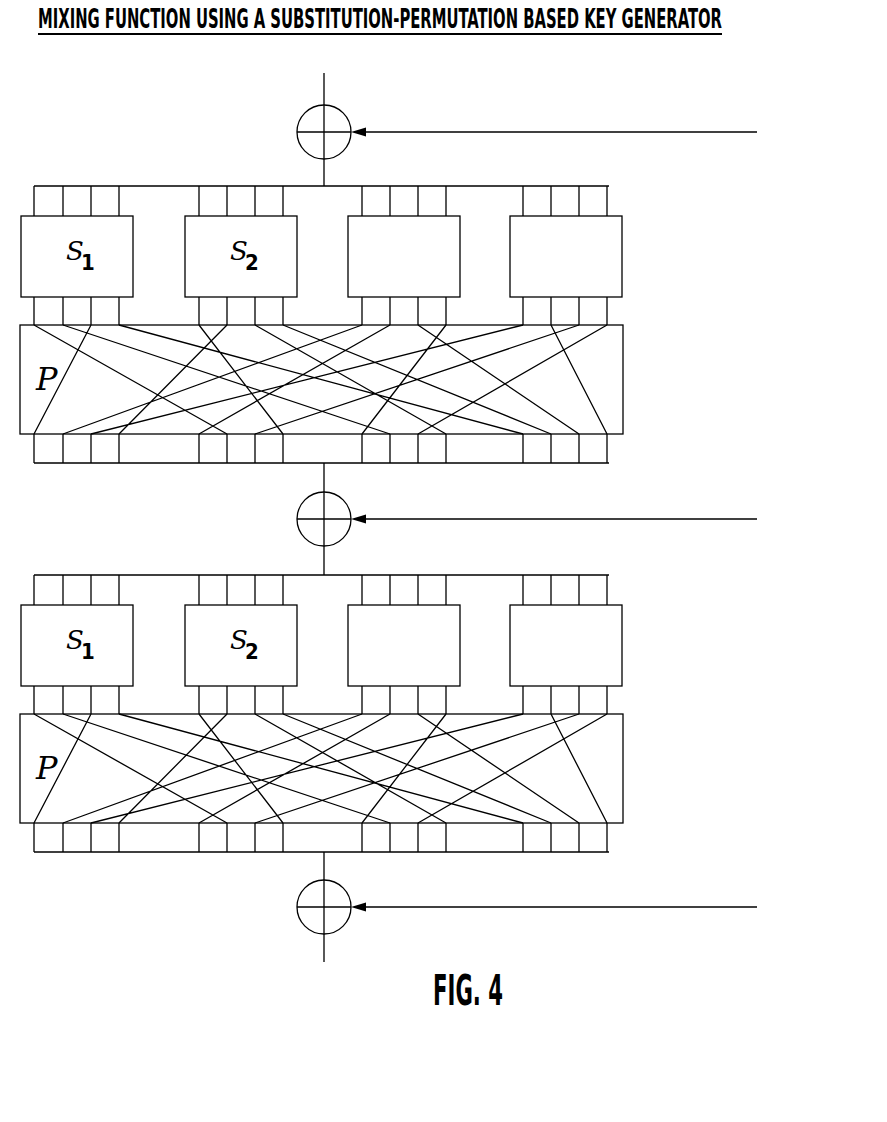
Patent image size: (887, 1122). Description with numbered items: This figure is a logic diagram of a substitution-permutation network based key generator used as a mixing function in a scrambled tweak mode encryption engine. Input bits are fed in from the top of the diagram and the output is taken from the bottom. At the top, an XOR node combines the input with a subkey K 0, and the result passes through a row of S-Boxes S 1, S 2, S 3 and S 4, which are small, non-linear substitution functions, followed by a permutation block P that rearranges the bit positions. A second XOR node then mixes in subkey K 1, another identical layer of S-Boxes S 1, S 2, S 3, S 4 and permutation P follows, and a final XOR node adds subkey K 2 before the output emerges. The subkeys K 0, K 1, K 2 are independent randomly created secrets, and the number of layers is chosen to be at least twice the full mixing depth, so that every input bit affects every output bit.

The round key K0 input 0 is at (554, 113).
The round key K1 input 1 is at (554, 500).
The round key K2 input 2 is at (554, 888).
The substitution box S3 3 is at (404, 451).
The substitution box S4 4 is at (566, 451).